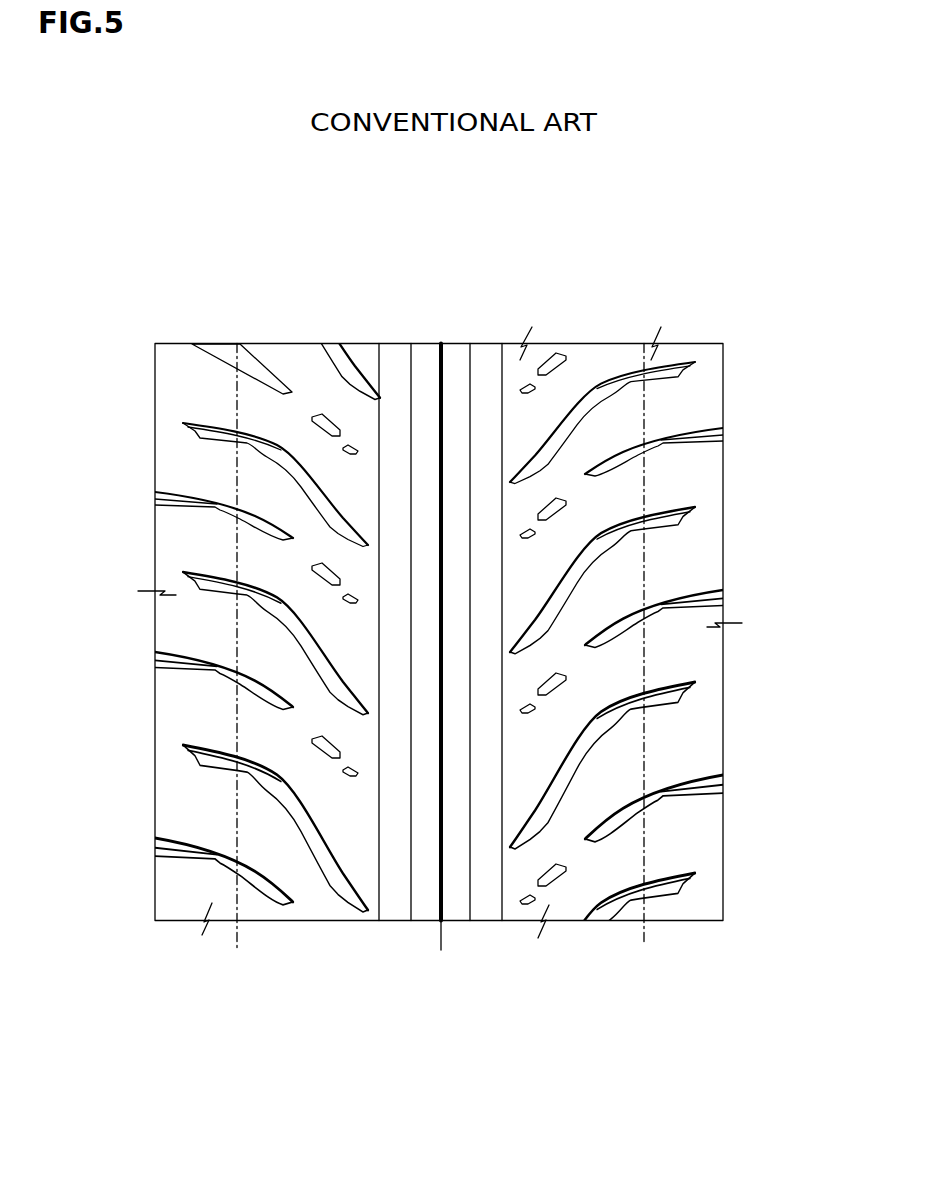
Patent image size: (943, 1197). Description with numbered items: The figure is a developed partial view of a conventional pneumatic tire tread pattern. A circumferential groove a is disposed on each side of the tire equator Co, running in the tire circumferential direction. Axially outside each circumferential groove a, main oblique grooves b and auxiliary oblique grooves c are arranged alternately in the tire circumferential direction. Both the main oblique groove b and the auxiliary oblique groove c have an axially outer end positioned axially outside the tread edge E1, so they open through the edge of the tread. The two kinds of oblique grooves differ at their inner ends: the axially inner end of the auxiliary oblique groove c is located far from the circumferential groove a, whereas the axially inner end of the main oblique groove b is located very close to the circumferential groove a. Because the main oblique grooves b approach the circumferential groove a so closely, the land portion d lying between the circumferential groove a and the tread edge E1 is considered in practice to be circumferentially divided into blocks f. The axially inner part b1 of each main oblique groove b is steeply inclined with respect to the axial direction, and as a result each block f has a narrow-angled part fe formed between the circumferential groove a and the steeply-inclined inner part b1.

The tread edge E1 is at (237, 392).
The circumferential groove a is at (390, 362).
The tire equator Co is at (440, 344).
The main oblique groove b is at (612, 385).
The auxiliary oblique groove c is at (245, 515).
The block f is at (583, 715).
The axially inner part of the main oblique groove b1 is at (577, 788).
The narrow-angled part of the block fe is at (516, 812).
The land portion d is at (645, 921).